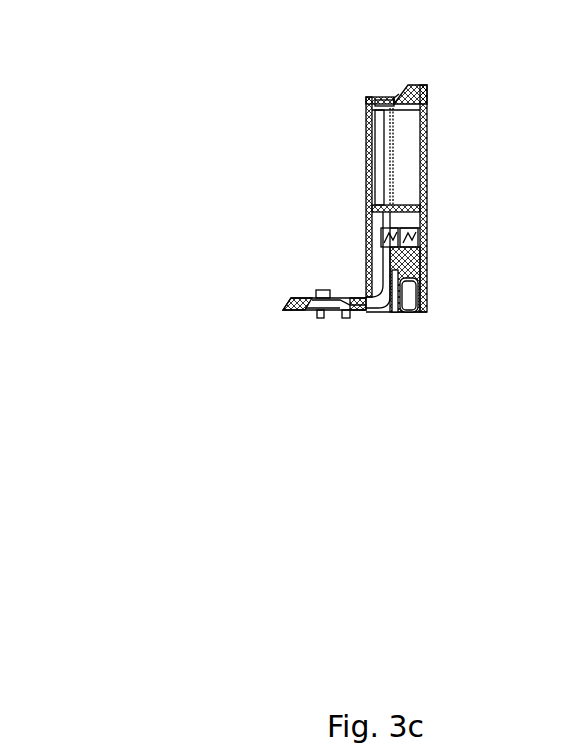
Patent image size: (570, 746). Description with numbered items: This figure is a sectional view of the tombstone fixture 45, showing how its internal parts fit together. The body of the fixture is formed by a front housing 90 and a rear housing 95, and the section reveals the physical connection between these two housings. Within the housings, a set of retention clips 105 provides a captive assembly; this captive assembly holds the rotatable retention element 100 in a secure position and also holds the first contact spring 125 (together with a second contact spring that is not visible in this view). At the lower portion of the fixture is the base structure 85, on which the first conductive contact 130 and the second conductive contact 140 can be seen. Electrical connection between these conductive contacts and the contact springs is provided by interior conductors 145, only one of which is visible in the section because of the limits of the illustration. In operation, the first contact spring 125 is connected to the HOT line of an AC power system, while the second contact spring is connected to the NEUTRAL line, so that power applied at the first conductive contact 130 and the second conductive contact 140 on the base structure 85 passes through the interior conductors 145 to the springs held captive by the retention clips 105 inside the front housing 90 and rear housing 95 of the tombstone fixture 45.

The tombstone fixture 45 is at (142, 325).
The base structure 85 is at (295, 298).
The front housing 90 is at (368, 217).
The rear housing 95 is at (425, 103).
The rotatable retention element 100 is at (372, 142).
The retention clips 105 is at (385, 98).
The first contact spring 125 is at (393, 165).
The first conductive contact 130 is at (322, 318).
The second conductive contact 140 is at (348, 318).
The interior conductors 145 is at (392, 262).